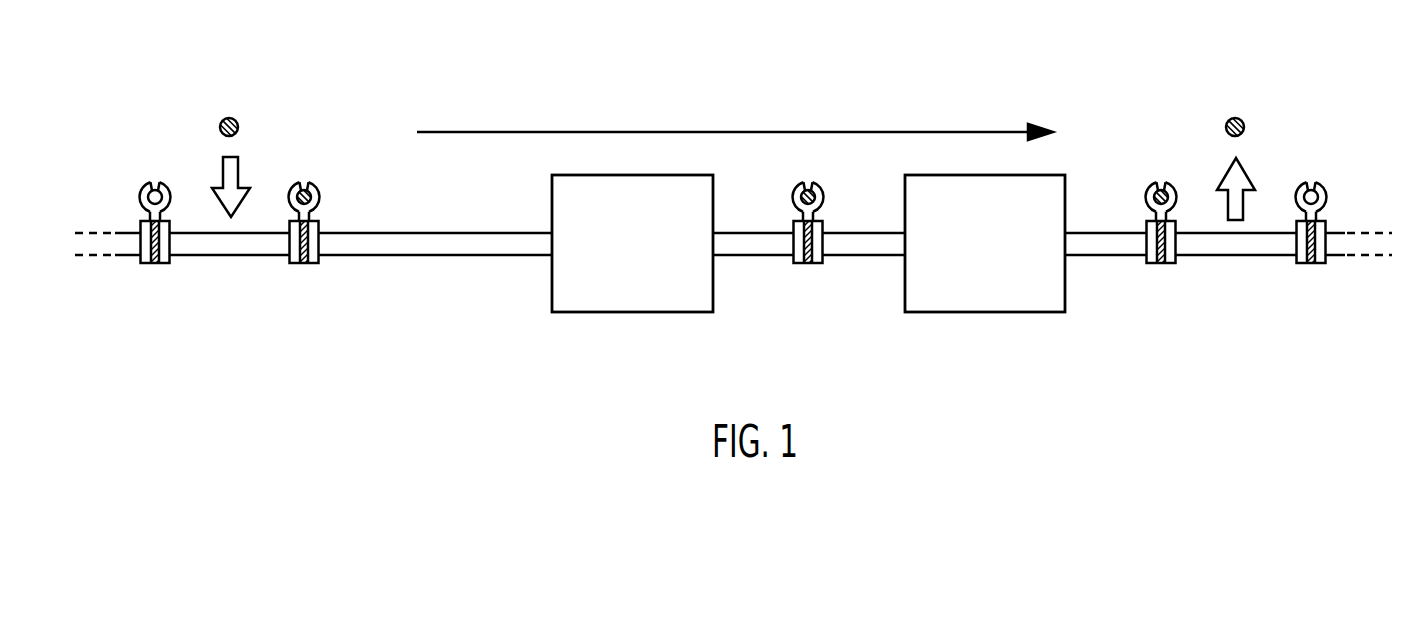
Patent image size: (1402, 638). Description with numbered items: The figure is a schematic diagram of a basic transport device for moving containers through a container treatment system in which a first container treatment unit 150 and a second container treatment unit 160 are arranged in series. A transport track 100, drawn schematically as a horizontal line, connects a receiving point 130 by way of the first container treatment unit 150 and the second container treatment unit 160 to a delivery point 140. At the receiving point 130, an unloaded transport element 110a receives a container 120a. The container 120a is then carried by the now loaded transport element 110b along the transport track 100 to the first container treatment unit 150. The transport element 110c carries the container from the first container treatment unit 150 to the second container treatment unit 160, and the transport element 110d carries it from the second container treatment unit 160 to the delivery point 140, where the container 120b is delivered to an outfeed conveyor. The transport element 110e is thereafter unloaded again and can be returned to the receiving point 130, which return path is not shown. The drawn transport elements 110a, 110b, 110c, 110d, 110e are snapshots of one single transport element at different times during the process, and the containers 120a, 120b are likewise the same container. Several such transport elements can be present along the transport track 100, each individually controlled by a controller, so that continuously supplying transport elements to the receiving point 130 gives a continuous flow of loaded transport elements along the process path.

The transport track 100 is at (445, 232).
The transport element 110a is at (155, 264).
The transport element 110b is at (304, 264).
The transport element 110c is at (808, 264).
The transport element 110d is at (1161, 264).
The transport element 110e is at (1311, 264).
The container 120a is at (232, 117).
The container 120b is at (1238, 117).
The receiving point 130 is at (238, 167).
The delivery point 140 is at (1247, 167).
The first container treatment unit 150 is at (654, 259).
The second container treatment unit 160 is at (1005, 259).